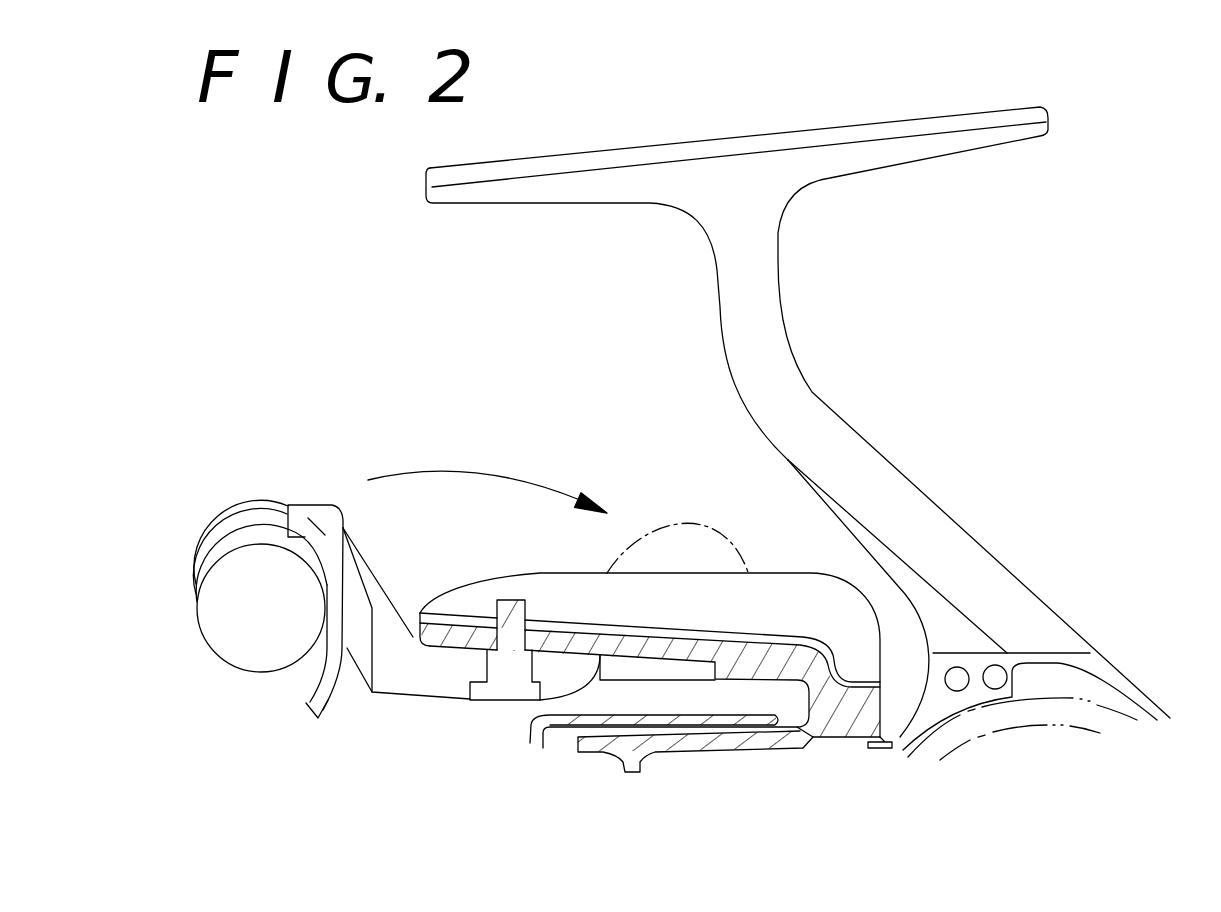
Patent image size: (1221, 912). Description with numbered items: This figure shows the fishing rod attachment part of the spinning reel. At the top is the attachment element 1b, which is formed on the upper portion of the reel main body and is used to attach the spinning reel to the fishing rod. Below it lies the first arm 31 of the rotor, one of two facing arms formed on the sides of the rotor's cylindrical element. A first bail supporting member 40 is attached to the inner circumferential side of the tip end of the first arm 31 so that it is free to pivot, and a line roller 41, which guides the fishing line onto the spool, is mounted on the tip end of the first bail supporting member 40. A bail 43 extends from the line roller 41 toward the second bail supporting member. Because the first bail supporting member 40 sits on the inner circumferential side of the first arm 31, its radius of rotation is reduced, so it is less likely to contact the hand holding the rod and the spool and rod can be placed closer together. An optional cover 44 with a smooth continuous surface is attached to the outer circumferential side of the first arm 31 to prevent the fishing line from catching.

The attachment element 1b is at (763, 317).
The first arm 31 is at (440, 637).
The first bail supporting member 40 is at (427, 672).
The line roller 41 is at (240, 643).
The bail 43 is at (328, 692).
The cover 44 is at (640, 597).